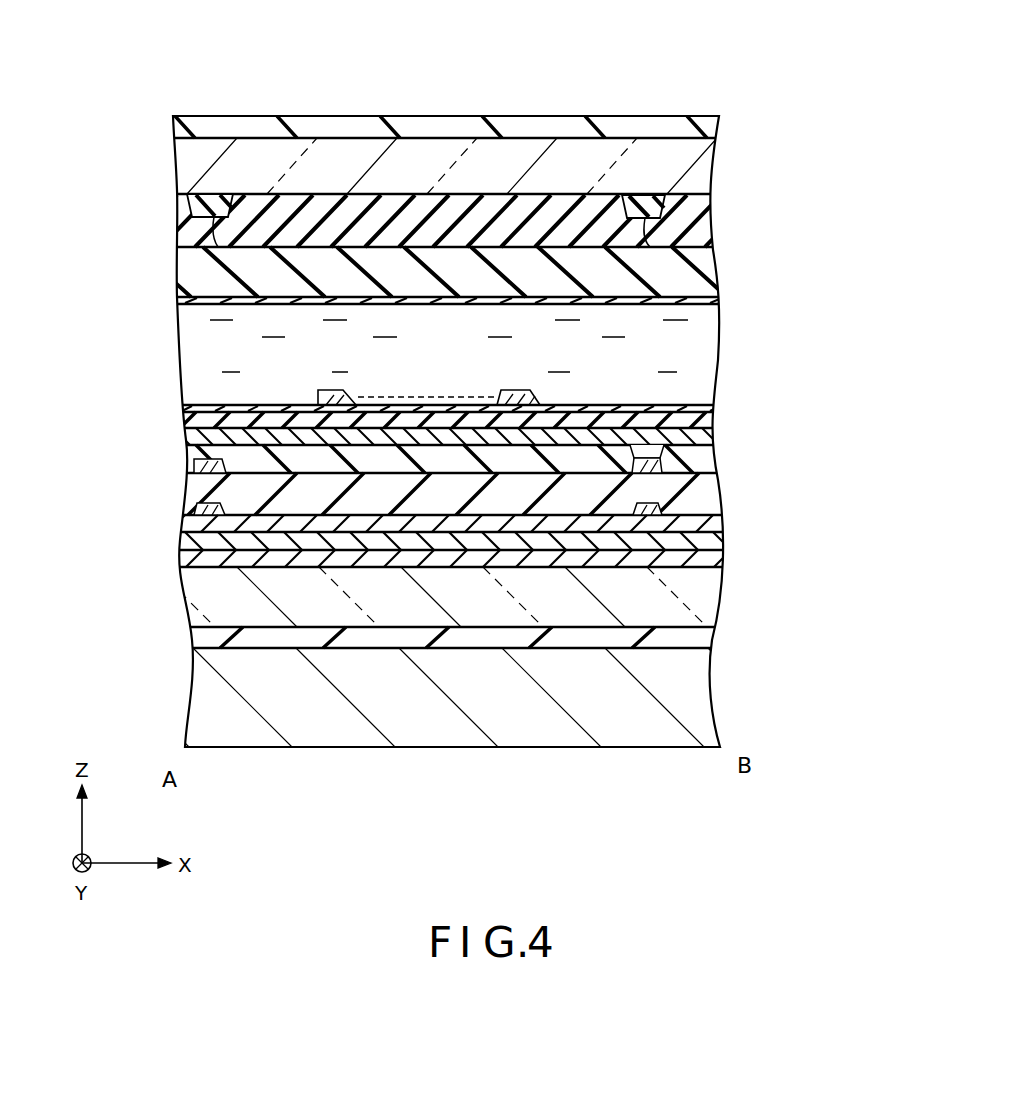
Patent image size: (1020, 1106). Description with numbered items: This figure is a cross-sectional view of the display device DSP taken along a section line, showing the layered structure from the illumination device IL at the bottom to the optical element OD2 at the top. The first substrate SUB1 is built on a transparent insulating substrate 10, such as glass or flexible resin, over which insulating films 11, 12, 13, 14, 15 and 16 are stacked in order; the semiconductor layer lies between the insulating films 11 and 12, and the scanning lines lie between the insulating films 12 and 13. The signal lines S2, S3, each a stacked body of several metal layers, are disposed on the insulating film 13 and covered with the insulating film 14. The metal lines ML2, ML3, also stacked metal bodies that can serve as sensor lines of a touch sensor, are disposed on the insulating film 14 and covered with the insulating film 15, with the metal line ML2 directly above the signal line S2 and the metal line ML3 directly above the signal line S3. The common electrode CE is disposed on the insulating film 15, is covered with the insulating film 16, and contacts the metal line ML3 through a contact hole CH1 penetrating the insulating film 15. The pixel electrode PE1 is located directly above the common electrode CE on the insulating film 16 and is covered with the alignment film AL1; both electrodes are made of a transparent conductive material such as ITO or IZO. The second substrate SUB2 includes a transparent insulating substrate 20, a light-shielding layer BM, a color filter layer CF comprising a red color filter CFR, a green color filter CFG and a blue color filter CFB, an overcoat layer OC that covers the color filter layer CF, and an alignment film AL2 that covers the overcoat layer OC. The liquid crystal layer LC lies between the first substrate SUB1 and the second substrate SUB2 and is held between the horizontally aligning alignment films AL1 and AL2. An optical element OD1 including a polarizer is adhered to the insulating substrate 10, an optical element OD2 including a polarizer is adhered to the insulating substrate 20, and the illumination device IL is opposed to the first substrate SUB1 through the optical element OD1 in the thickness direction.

The display device DSP is at (722, 98).
The optical element OD2 is at (700, 129).
The insulating substrate 20 is at (700, 172).
The second substrate SUB2 is at (458, 156).
The color filter layer CF is at (405, 131).
The red color filter CFR is at (190, 223).
The green color filter CFG is at (448, 210).
The blue color filter CFB is at (692, 210).
The light-shielding layer BM is at (218, 210).
The overcoat layer OC is at (710, 273).
The alignment film AL2 is at (697, 305).
The liquid crystal layer LC is at (690, 353).
The alignment film AL1 is at (677, 407).
The pixel electrode PE1 is at (522, 402).
The common electrode CE is at (205, 437).
The contact hole CH1 is at (647, 452).
The insulating film 16 is at (698, 420).
The insulating film 15 is at (695, 465).
The insulating film 14 is at (707, 497).
The insulating film 13 is at (710, 522).
The insulating film 12 is at (710, 540).
The insulating film 11 is at (712, 557).
The insulating substrate 10 is at (712, 597).
The optical element OD1 is at (702, 638).
The first substrate SUB1 is at (486, 581).
The metal line ML2 is at (205, 466).
The metal line ML3 is at (636, 465).
The signal line S2 is at (212, 507).
The signal line S3 is at (640, 509).
The illumination device IL is at (667, 730).